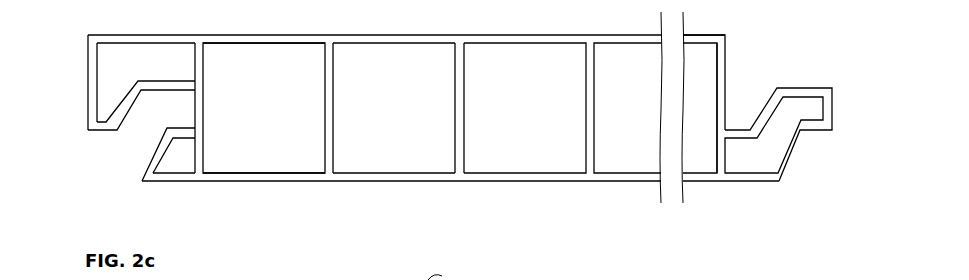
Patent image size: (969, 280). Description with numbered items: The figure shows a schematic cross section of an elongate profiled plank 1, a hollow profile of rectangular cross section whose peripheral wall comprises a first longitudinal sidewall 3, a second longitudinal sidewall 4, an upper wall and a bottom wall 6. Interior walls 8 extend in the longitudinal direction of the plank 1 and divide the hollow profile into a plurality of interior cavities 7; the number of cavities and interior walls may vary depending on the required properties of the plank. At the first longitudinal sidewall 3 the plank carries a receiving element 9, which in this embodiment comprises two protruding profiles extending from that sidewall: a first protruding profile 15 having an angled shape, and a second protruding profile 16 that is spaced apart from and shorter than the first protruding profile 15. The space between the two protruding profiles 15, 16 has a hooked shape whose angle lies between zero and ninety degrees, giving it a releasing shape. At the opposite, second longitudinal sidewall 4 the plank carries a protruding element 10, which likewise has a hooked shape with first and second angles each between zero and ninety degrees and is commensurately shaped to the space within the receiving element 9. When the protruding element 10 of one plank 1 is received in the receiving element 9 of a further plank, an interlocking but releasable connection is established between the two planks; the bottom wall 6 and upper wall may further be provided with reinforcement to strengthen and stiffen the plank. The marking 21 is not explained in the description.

The elongate profiled plank 1 is at (405, 122).
The first longitudinal sidewall 3 is at (727, 80).
The second longitudinal sidewall 4 is at (195, 107).
The bottom wall 6 is at (440, 183).
The interior cavity 7 is at (428, 33).
The interior wall 8 is at (457, 123).
The receiving element 9 is at (148, 180).
The protruding element 10 is at (832, 110).
The first protruding profile 15 is at (86, 71).
The second protruding profile 16 is at (170, 184).
The label 21 is at (736, 207).